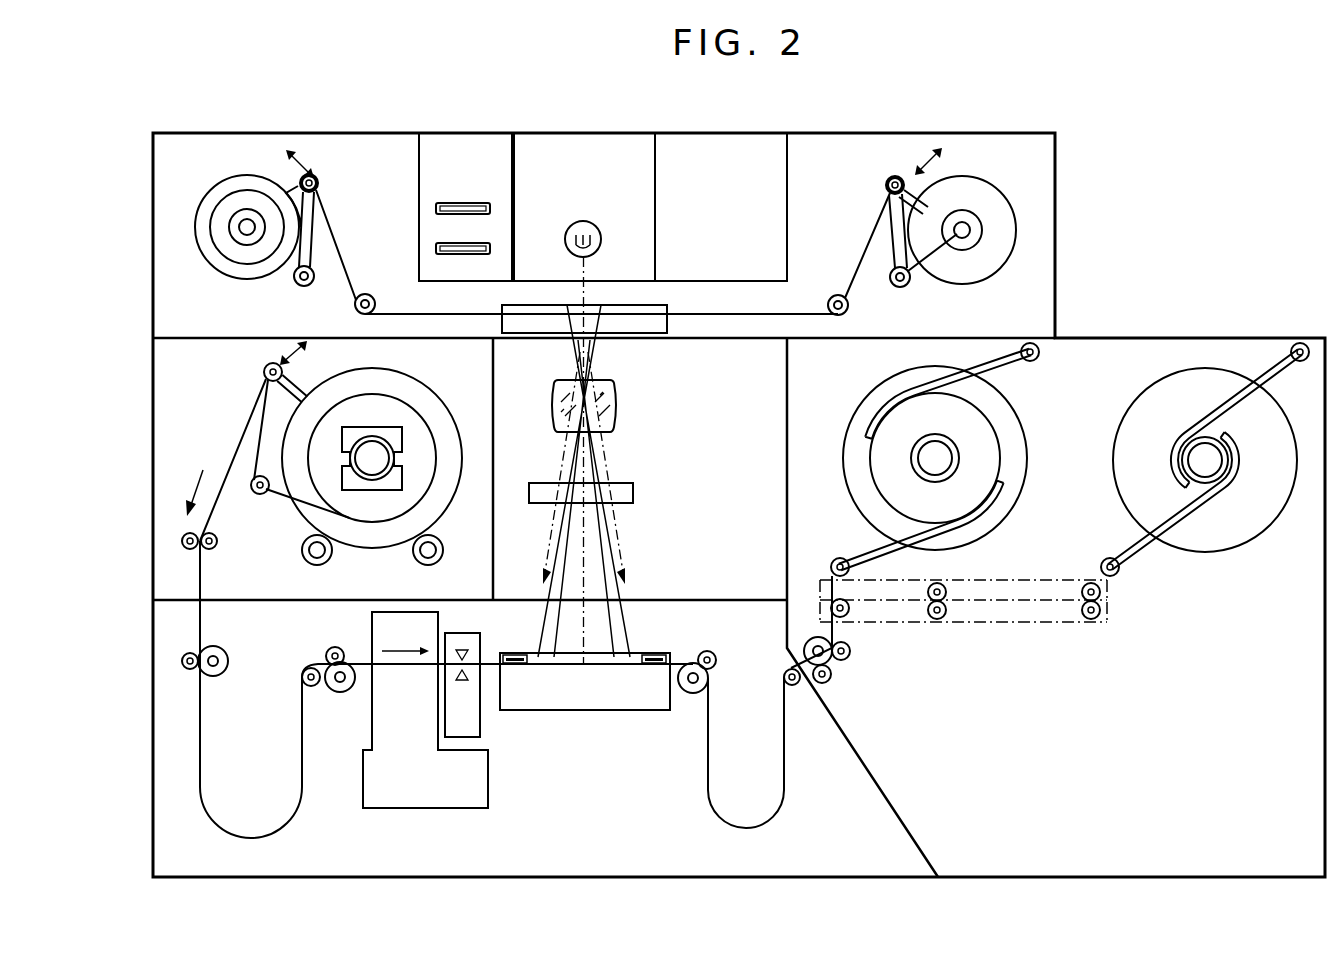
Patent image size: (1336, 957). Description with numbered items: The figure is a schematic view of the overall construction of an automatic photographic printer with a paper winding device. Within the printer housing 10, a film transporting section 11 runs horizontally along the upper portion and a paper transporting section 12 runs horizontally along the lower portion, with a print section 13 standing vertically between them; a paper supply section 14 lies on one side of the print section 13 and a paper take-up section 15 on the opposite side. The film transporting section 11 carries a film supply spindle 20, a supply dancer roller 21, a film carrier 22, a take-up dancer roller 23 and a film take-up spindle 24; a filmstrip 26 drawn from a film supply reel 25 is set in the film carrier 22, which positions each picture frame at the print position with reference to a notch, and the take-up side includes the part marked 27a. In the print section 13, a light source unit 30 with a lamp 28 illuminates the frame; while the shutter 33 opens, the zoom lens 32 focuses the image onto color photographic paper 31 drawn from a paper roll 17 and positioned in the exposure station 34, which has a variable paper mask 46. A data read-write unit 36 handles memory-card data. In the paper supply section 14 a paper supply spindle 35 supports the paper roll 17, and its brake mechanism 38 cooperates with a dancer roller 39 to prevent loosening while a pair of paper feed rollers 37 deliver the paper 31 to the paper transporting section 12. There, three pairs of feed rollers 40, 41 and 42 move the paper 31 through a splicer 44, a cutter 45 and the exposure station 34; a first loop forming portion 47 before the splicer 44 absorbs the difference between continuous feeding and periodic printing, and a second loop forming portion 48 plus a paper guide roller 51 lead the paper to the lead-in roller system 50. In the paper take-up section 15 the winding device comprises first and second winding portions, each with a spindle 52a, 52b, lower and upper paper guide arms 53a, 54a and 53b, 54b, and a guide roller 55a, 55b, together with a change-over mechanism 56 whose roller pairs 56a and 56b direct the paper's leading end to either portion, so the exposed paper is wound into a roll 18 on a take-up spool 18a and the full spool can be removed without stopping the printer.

The printer housing 10 is at (861, 122).
The film transporting section 11 is at (402, 233).
The paper transporting section 12 is at (824, 851).
The print section 13 is at (695, 480).
The paper supply section 14 is at (482, 391).
The paper take-up section 15 is at (835, 397).
The paper roll 17 is at (383, 395).
The paper roll 18 is at (868, 482).
The take-up spool 18a is at (957, 438).
The film supply spindle 20 is at (247, 219).
The supply dancer roller 21 is at (318, 180).
The film carrier 22 is at (660, 305).
The take-up dancer roller 23 is at (885, 183).
The film take-up spindle 24 is at (968, 224).
The film supply reel 25 is at (247, 280).
The filmstrip 26 is at (795, 312).
The reel shaft 27a is at (965, 248).
The lamp 28 is at (583, 221).
The light source unit 30 is at (647, 214).
The color photographic paper 31 is at (239, 445).
The zoom lens 32 is at (608, 408).
The shutter 33 is at (623, 494).
The exposure station 34 is at (567, 715).
The paper supply spindle 35 is at (380, 462).
The data read-write unit 36 is at (463, 203).
The paper feed rollers 37 is at (226, 538).
The brake mechanism 38 is at (358, 490).
The dancer roller 39 is at (263, 372).
The feed rollers 40 is at (236, 644).
The feed rollers 41 is at (338, 702).
The feed rollers 42 is at (682, 712).
The splicer 44 is at (437, 797).
The cutter 45 is at (477, 727).
The variable paper mask 46 is at (515, 654).
The first loop forming portion 47 is at (305, 826).
The second loop forming portion 48 is at (695, 812).
The lead-in roller system 50 is at (862, 652).
The paper guide roller 51 is at (784, 677).
The spindle 52a is at (947, 460).
The spindle 52b is at (1195, 463).
The lower paper guide arm 53a is at (857, 556).
The lower paper guide arm 53b is at (1165, 525).
The upper paper guide arm 54a is at (1008, 368).
The upper paper guide arm 54b is at (1282, 347).
The guide roller 55a is at (831, 565).
The guide roller 55b is at (1104, 560).
The change-over mechanism 56 is at (1015, 622).
The roller pair 56a is at (940, 582).
The roller pair 56b is at (1101, 610).